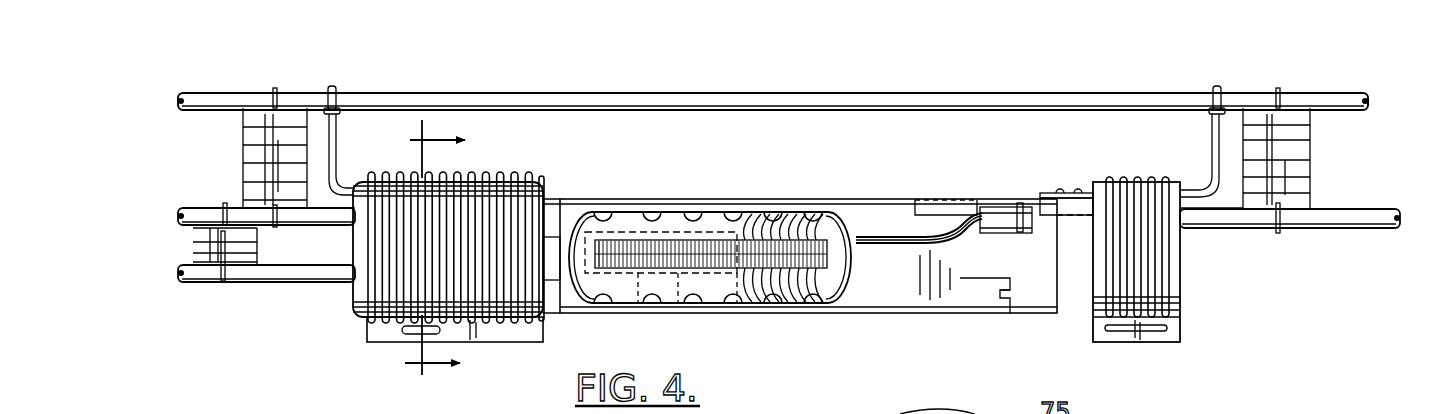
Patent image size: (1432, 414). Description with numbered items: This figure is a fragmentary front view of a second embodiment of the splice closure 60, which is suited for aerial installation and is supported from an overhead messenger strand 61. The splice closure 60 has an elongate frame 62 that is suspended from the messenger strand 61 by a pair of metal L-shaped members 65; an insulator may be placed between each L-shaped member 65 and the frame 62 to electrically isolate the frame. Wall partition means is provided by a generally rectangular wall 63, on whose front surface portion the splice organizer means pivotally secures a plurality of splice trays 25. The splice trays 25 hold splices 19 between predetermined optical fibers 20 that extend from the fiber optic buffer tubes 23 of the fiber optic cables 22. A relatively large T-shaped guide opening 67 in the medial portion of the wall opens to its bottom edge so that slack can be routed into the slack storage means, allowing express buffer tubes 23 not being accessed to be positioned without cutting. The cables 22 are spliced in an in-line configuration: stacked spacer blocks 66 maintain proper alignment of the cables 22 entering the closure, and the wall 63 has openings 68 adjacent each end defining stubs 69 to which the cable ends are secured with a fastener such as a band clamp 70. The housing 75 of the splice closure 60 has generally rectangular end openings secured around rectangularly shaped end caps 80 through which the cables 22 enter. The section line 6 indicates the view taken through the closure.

The section line 6- 6 is at (434, 253).
The splices 19 is at (742, 250).
The optical fibers 20 is at (823, 215).
The fiber optic cables 22 is at (209, 206).
The fiber optic buffer tubes 23 is at (898, 238).
The splice trays 25 is at (673, 205).
The splice closure 60 is at (338, 76).
The messenger strand 61 is at (990, 102).
The elongate frame 62 is at (917, 320).
The generally rectangular wall 63 is at (893, 292).
The L-shaped members 65 is at (336, 122).
The stacked spacer blocks 66 is at (250, 177).
The T-shaped guide opening 67 is at (698, 300).
The openings 68 is at (985, 207).
The stubs 69 is at (1000, 296).
The band clamp 70 is at (1012, 206).
The housing 75 is at (530, 172).
The end caps 80 is at (1110, 178).